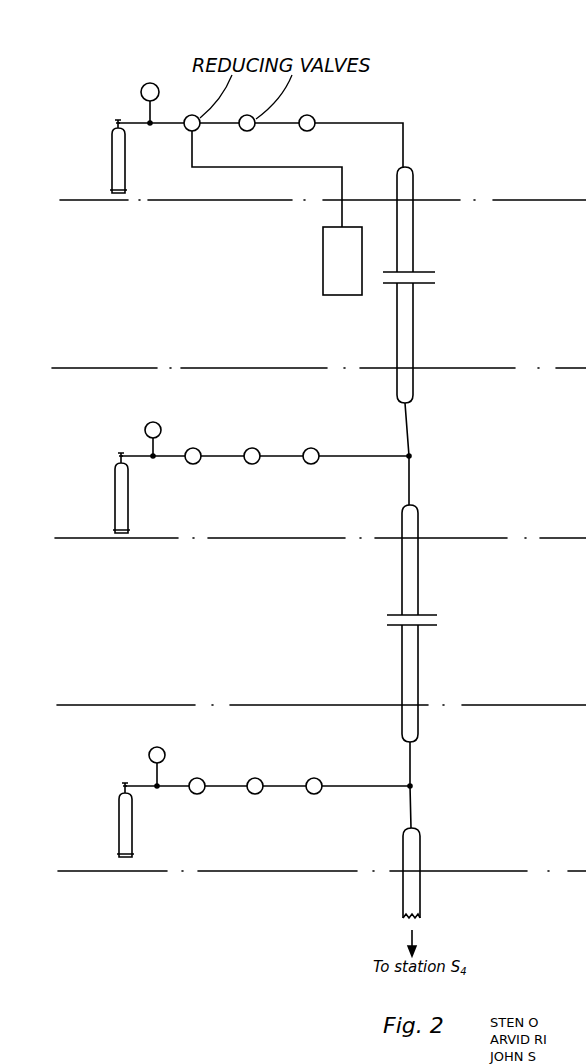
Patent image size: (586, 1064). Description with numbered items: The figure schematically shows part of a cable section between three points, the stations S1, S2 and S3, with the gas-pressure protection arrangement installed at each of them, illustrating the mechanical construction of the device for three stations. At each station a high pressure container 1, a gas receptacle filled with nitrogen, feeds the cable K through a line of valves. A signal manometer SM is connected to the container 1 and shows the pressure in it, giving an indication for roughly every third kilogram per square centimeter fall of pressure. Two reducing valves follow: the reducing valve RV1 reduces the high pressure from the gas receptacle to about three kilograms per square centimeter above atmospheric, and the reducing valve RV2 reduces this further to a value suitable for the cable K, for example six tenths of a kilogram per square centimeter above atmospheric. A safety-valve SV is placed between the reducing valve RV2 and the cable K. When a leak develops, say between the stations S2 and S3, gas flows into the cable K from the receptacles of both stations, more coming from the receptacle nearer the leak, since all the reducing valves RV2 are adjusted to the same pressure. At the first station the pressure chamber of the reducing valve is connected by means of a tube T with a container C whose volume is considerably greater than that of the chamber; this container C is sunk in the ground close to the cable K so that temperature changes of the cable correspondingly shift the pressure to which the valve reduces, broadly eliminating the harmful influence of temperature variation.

The high pressure container 1 is at (106, 165).
The signal manometer SM is at (153, 427).
The reducing valve RV1 is at (195, 446).
The reducing valve RV2 is at (254, 446).
The safety-valve SV is at (311, 445).
The tube T is at (238, 167).
The container C is at (342, 261).
The cable K is at (414, 238).
The station S1 is at (307, 162).
The station S2 is at (307, 417).
The station S3 is at (310, 751).